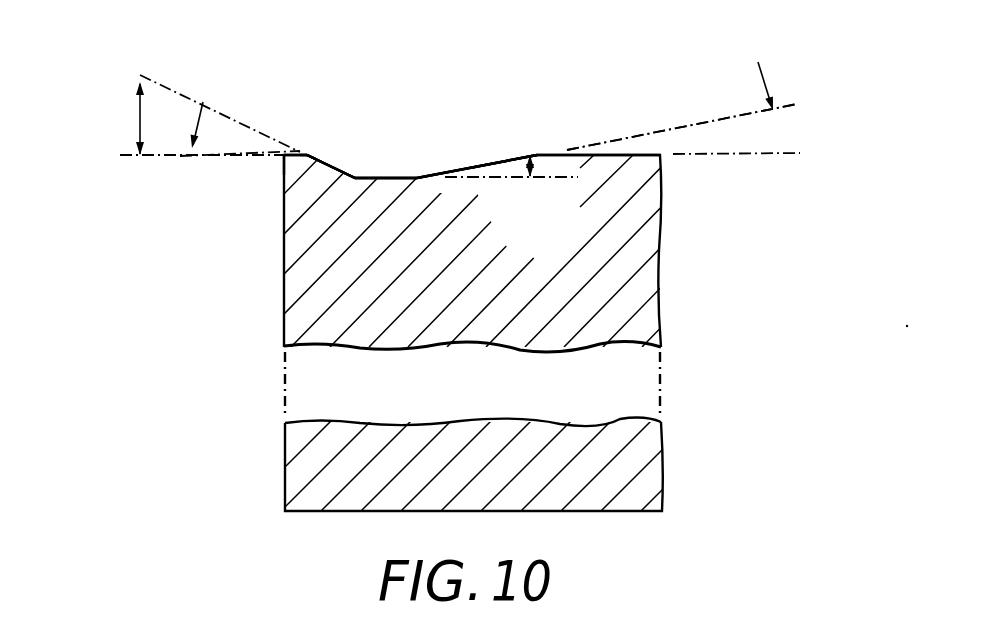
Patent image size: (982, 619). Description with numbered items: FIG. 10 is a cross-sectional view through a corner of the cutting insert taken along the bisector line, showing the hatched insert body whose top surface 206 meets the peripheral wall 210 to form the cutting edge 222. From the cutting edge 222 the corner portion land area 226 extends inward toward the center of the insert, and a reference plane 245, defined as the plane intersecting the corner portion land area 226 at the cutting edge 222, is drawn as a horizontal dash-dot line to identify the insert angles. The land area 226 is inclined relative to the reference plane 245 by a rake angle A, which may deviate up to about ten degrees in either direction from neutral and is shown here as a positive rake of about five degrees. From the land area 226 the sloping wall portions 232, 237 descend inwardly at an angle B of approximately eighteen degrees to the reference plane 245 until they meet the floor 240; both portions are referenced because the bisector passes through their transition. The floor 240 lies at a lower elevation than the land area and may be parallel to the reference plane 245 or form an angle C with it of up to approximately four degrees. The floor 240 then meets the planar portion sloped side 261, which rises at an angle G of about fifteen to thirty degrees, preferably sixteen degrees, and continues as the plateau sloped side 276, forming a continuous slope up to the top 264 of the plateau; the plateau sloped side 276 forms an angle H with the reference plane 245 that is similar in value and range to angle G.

The top surface 206 is at (434, 100).
The peripheral wall 210 is at (284, 287).
The cutting edge 222 is at (282, 158).
The corner portion land area 226 is at (298, 150).
The sloping wall portion 232 is at (334, 160).
The sloping wall portion 237 is at (334, 160).
The floor 240 is at (386, 177).
The reference plane 245 is at (114, 158).
The planar portion sloped side 261 is at (455, 167).
The top of the plateau 264 is at (608, 152).
The plateau sloped side 276 is at (490, 157).
The rake angle A is at (192, 162).
The sloping wall angle B is at (138, 110).
The floor angle C is at (530, 185).
The planar portion sloped side angle G is at (778, 160).
The plateau sloped side angle H is at (778, 160).